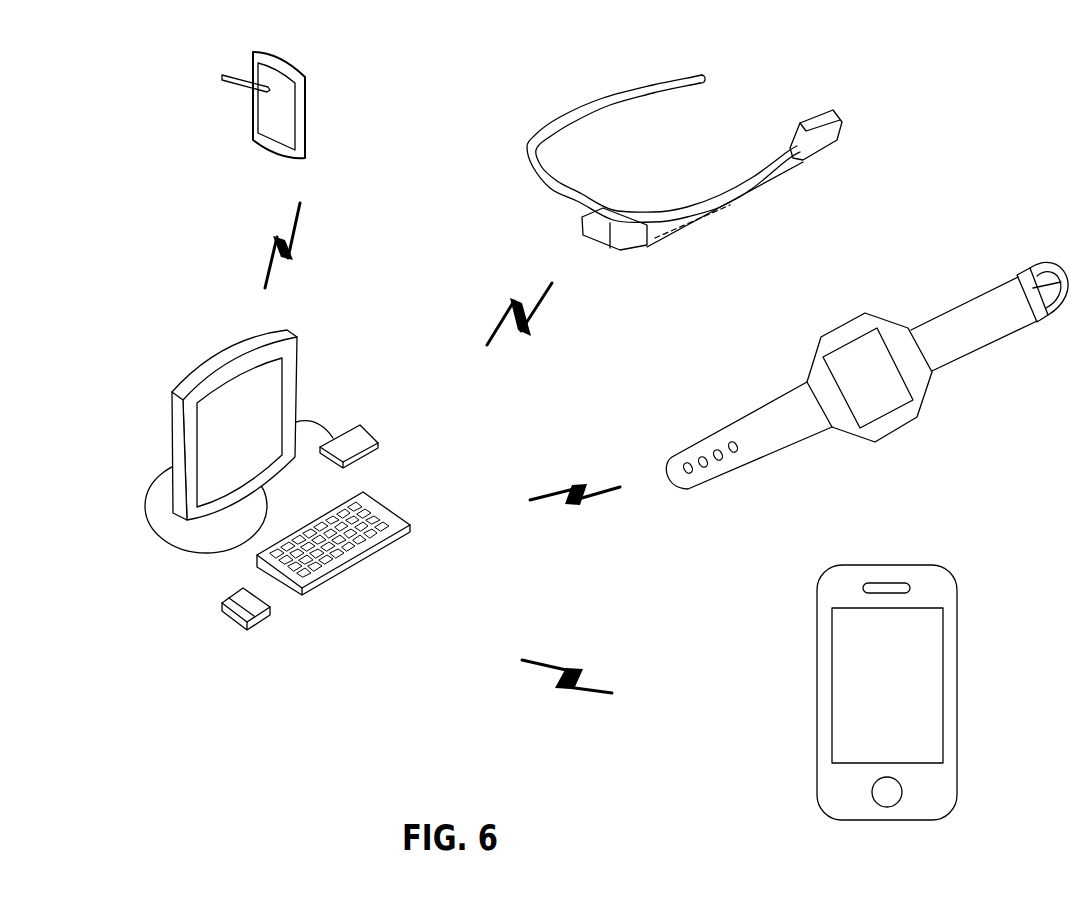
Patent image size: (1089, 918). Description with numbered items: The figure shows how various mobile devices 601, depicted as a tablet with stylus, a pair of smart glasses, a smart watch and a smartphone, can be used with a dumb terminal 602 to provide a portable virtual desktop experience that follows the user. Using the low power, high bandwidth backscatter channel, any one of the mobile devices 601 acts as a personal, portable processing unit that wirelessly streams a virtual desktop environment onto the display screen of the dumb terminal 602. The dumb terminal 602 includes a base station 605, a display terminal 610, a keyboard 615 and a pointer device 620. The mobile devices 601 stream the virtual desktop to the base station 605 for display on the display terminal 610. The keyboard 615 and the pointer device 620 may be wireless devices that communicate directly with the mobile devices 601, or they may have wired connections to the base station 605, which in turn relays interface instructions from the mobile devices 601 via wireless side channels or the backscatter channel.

The mobile devices 601 is at (310, 105).
The dumb terminal 602 is at (148, 332).
The base station 605 is at (377, 427).
The display terminal 610 is at (250, 440).
The keyboard 615 is at (357, 562).
The pointer device 620 is at (258, 622).